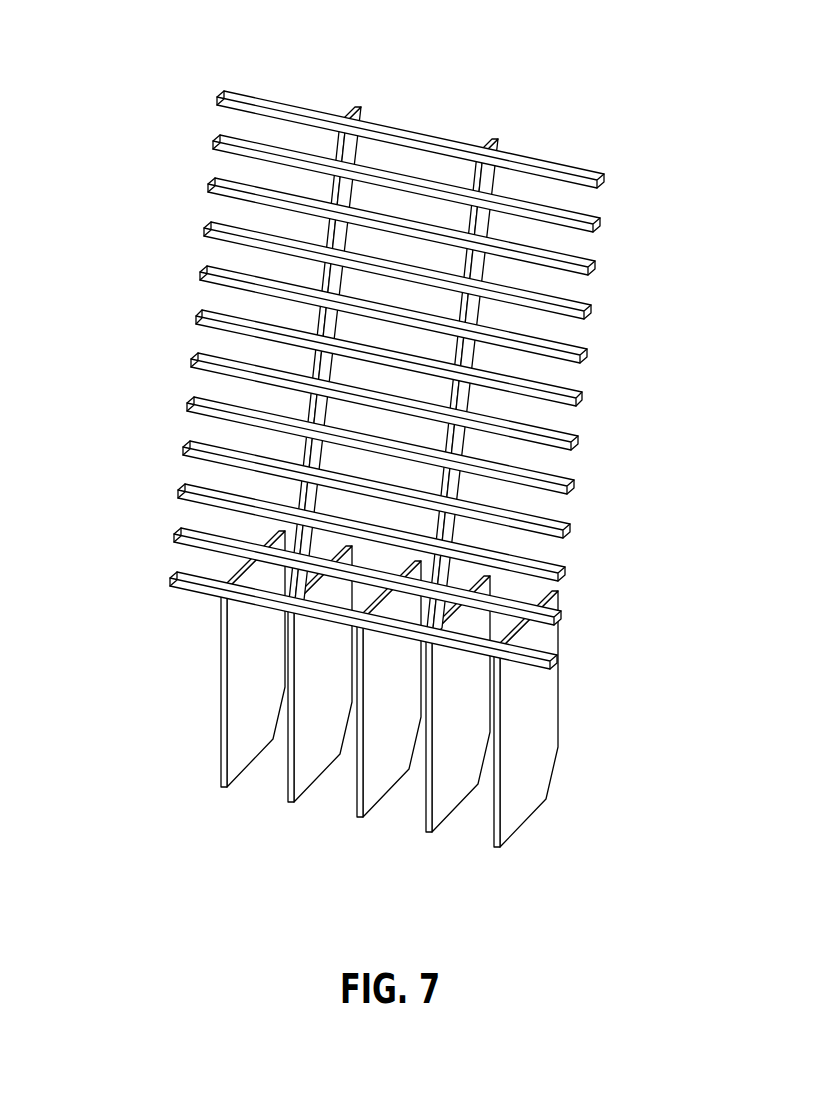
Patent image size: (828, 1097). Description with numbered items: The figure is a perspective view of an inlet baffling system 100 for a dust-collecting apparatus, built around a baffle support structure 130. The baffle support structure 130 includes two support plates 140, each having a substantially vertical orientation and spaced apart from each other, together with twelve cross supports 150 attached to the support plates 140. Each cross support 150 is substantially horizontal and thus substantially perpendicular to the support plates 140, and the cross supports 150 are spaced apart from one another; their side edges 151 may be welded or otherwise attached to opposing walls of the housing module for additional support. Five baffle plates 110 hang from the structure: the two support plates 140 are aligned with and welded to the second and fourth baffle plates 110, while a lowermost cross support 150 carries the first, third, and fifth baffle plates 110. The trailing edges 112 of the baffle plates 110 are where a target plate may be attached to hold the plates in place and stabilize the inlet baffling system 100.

The inlet baffling system 100 is at (643, 101).
The baffle plates 110 is at (242, 747).
The trailing edges 112 is at (222, 733).
The baffle support structure 130 is at (152, 258).
The support plates 140 is at (351, 195).
The cross supports 150 is at (555, 440).
The side edges 151 is at (197, 401).